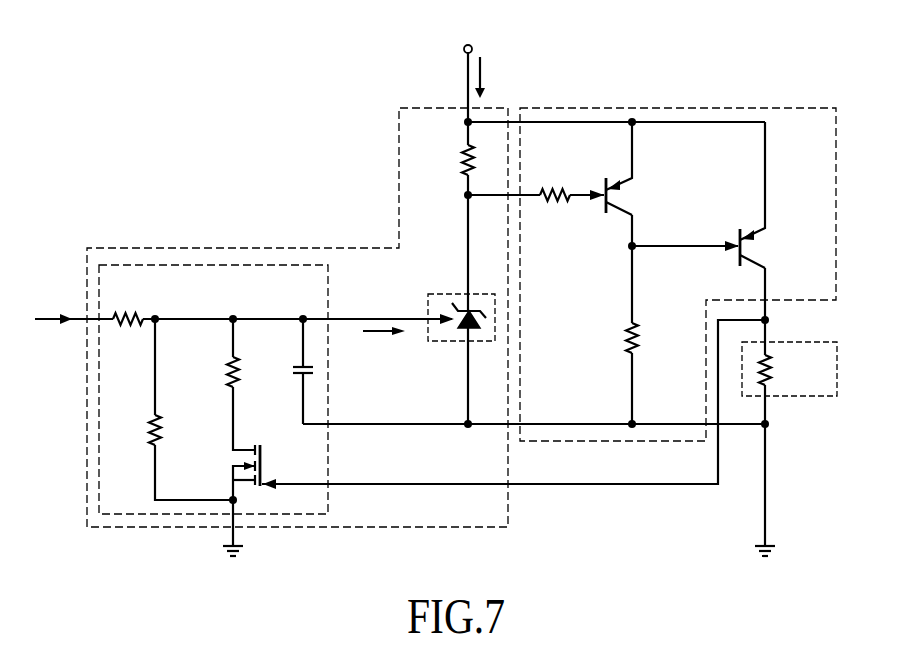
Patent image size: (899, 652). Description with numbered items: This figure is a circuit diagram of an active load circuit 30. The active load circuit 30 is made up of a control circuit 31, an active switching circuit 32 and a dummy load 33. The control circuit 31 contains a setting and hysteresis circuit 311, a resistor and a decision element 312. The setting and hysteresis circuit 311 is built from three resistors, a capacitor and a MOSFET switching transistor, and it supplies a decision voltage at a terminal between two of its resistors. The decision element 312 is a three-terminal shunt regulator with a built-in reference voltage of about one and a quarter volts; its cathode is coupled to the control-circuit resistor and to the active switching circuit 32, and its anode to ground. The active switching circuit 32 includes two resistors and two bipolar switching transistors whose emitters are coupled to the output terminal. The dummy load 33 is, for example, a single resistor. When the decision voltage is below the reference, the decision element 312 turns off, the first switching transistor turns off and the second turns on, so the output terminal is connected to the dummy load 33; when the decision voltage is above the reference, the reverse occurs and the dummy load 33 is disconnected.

The active load circuit 30 is at (847, 43).
The control circuit 31 is at (222, 247).
The setting and hysteresis circuit 311 is at (330, 457).
The decision element 312 is at (447, 292).
The active switching circuit 32 is at (670, 106).
The dummy load 33 is at (800, 397).